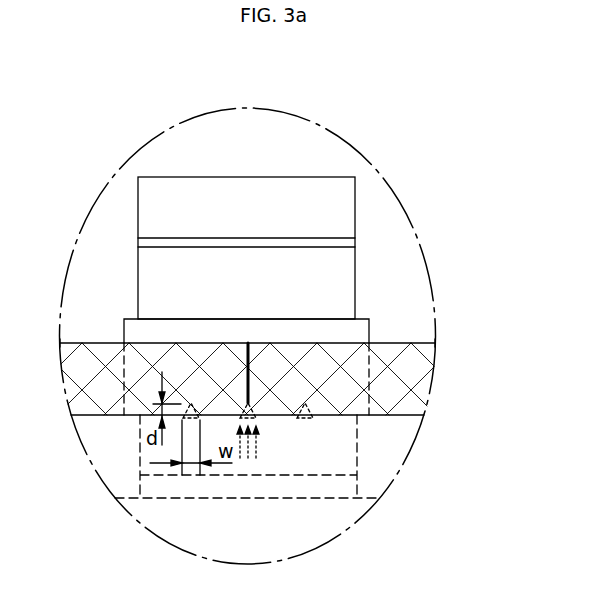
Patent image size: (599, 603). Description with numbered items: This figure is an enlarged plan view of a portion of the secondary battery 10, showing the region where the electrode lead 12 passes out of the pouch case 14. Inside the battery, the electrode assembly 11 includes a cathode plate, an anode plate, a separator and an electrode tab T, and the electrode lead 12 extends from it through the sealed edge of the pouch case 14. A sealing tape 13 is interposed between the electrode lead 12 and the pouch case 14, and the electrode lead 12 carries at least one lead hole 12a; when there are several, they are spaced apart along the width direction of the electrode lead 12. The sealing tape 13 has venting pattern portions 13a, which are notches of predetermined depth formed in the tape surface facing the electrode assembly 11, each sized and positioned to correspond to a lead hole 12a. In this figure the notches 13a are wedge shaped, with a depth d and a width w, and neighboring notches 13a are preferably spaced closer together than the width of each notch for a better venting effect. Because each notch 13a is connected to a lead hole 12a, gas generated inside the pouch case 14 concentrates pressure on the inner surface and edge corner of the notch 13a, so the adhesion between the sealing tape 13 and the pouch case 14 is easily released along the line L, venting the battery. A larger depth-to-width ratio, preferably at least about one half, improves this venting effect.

The secondary battery 10 is at (380, 112).
The electrode assembly 11 is at (346, 518).
The electrode lead 12 is at (348, 190).
The lead hole 12a is at (311, 421).
The sealing tape 13 is at (369, 319).
The venting pattern portion 13a is at (311, 412).
The pouch case 14 is at (410, 341).
The line L is at (249, 380).
The electrode tab T is at (346, 483).